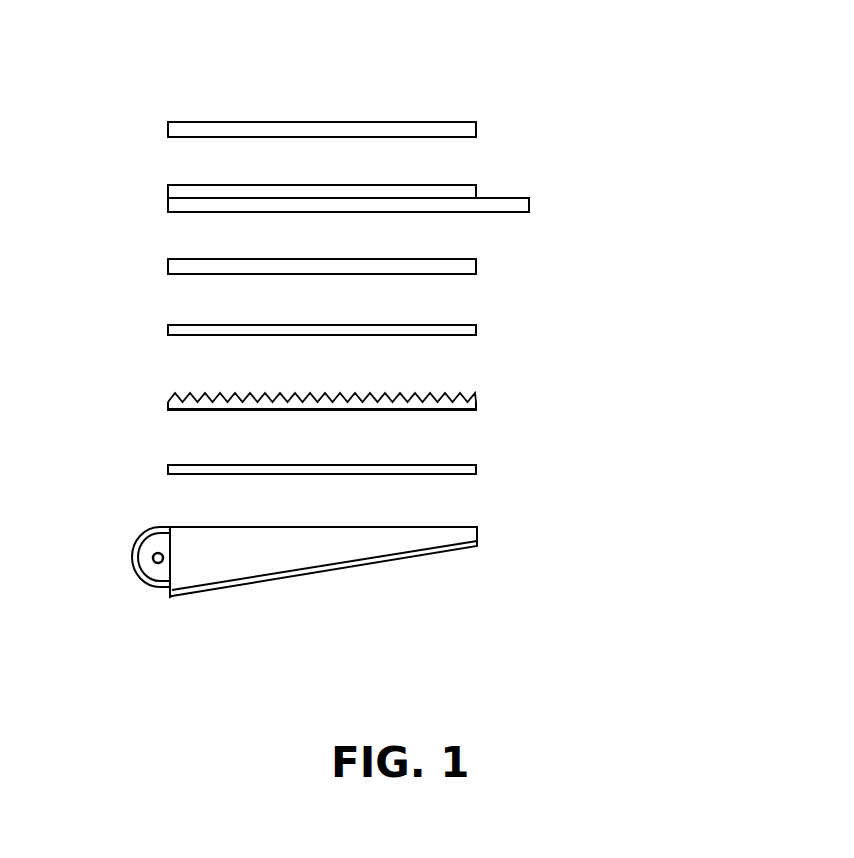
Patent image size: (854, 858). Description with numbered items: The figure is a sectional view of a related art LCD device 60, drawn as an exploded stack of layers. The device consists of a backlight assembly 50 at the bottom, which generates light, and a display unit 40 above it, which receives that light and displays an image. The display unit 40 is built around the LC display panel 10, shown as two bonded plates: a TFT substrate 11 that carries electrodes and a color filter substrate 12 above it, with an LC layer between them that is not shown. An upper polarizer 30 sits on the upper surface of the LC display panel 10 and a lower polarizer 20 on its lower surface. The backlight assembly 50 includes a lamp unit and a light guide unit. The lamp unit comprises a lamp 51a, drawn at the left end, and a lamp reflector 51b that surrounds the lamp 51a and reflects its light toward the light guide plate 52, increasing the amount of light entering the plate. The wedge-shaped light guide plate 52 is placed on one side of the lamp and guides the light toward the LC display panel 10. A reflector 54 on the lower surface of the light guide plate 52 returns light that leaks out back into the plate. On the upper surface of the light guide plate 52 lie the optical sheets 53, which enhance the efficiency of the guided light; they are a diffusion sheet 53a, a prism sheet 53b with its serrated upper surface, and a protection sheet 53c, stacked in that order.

The LCD device 60 is at (457, 82).
The display unit 40 is at (648, 82).
The upper polarizer 30 is at (477, 130).
The LC display panel 10 is at (573, 152).
The color filter substrate 12 is at (477, 191).
The TFT substrate 11 is at (530, 208).
The lower polarizer 20 is at (477, 267).
The backlight assembly 50 is at (642, 300).
The optical sheets 53 is at (550, 305).
The protection sheet 53c is at (477, 331).
The prism sheet 53b is at (477, 404).
The diffusion sheet 53a is at (477, 470).
The light guide plate 52 is at (478, 530).
The reflector 54 is at (478, 545).
The lamp reflector 51b is at (153, 589).
The lamp 51a is at (153, 558).